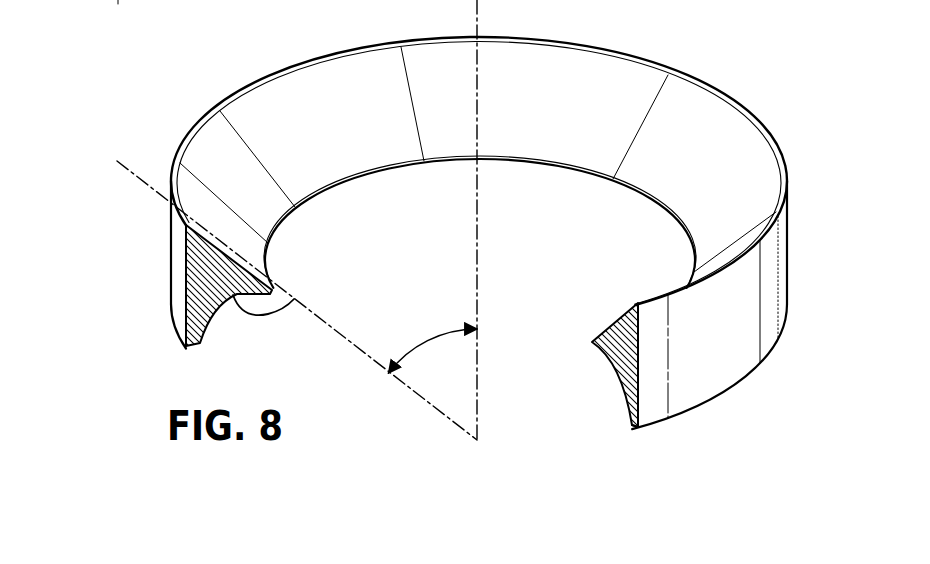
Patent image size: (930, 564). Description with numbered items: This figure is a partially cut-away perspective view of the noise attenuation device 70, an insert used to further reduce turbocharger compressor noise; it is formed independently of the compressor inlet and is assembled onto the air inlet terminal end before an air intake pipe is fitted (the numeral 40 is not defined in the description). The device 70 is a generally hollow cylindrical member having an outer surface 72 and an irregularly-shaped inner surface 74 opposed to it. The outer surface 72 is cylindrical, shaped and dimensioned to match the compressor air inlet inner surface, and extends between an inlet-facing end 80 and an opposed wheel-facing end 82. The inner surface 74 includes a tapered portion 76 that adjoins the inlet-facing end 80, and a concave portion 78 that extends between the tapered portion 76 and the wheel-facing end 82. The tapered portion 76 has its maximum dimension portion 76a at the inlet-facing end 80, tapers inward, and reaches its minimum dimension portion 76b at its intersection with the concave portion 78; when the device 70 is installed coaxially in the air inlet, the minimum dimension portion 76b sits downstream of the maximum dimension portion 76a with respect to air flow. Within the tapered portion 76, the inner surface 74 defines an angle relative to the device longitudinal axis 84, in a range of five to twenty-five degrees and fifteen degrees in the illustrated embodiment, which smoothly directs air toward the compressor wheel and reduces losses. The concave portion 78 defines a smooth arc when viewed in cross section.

The seal assembly 40 is at (211, 5).
The noise attenuation device 70 is at (151, 149).
The outer surface 72 is at (738, 355).
The inner surface 74 is at (340, 227).
The tapered portion 76 is at (254, 210).
The maximum dimension portion 76a is at (596, 178).
The minimum dimension portion 76b is at (654, 62).
The concave portion 78 is at (268, 297).
The inlet-facing end 80 is at (647, 298).
The wheel-facing end 82 is at (628, 421).
The device longitudinal axis 84 is at (478, 78).